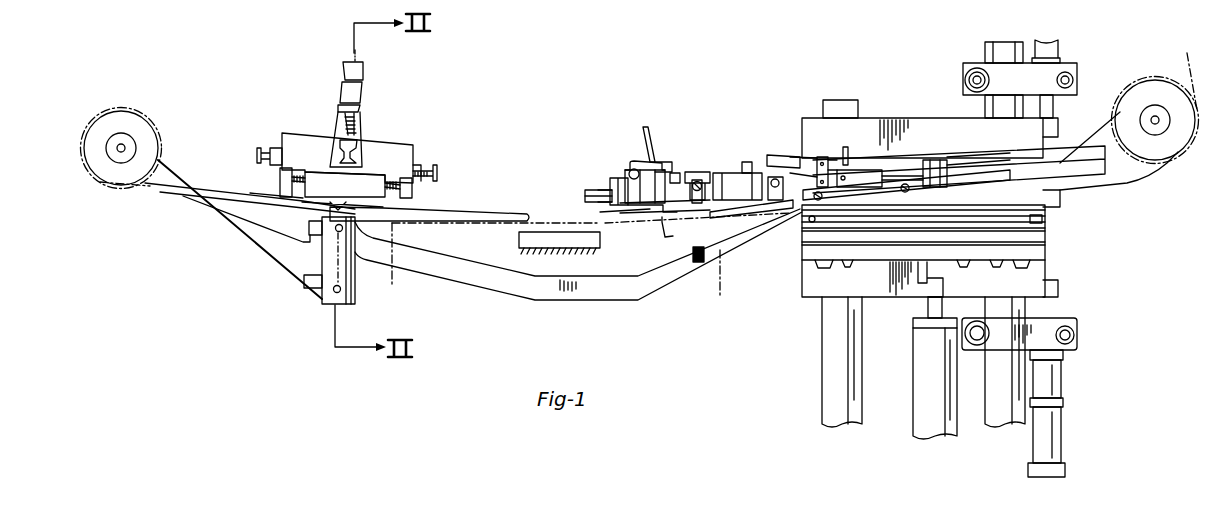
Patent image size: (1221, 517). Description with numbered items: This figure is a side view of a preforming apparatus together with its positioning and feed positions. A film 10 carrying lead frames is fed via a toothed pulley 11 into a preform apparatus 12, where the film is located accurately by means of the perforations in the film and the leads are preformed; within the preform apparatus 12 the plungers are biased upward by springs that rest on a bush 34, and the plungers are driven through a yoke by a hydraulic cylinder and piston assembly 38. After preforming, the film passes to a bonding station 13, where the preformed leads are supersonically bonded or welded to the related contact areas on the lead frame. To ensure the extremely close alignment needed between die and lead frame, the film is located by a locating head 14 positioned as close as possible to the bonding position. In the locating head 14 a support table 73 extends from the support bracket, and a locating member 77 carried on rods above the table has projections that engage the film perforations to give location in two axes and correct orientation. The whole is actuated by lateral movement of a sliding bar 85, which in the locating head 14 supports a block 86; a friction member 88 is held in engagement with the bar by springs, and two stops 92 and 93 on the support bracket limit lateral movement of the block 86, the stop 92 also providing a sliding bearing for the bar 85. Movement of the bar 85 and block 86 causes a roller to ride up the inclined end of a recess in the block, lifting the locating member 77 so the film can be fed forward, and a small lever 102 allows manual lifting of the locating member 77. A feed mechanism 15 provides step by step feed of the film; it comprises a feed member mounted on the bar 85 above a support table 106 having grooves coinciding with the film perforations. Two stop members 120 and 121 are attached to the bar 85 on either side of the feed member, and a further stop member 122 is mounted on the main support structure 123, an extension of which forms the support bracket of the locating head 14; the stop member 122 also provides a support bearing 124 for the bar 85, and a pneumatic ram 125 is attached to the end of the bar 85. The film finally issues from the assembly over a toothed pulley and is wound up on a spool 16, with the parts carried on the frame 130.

The film 10 is at (92, 117).
The toothed pulley 11 is at (140, 123).
The preform apparatus 12 is at (380, 131).
The bonding station 13 is at (524, 203).
The locating head 14 is at (623, 152).
The feed mechanism 15 is at (744, 142).
The take-up reel 16 is at (1150, 95).
The bush 34 is at (517, 237).
The hydraulic cylinder and piston assembly 38 is at (342, 90).
The support table 73 is at (681, 231).
The locating member 77 is at (639, 215).
The sliding bar 85 is at (585, 197).
The block 86 is at (627, 183).
The friction member 88 is at (666, 163).
The stop 92 is at (594, 190).
The stop 93 is at (686, 173).
The lever 102 is at (649, 126).
The support table 106 is at (745, 206).
The stop member 120 is at (697, 205).
The stop member 121 is at (777, 201).
The stop member 122 is at (798, 166).
The main support structure 123 is at (803, 173).
The support bearing 124 is at (820, 163).
The pneumatic ram 125 is at (953, 163).
The frame 130 is at (490, 278).